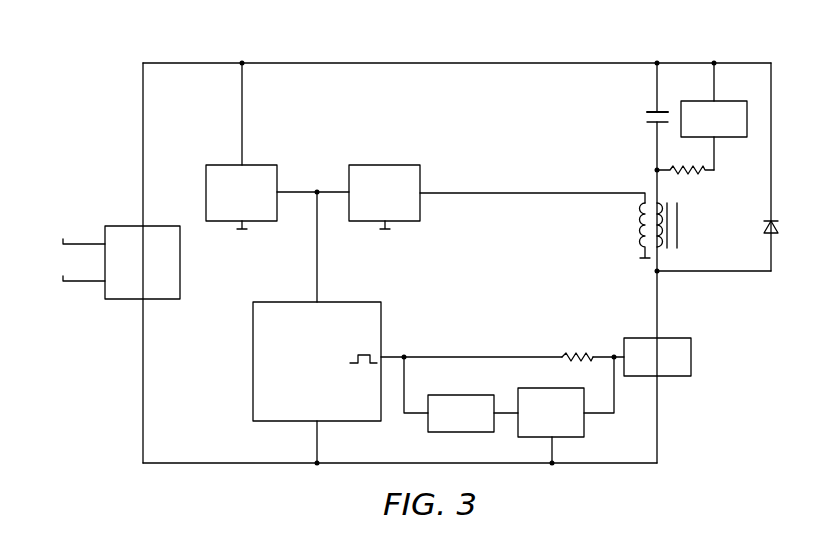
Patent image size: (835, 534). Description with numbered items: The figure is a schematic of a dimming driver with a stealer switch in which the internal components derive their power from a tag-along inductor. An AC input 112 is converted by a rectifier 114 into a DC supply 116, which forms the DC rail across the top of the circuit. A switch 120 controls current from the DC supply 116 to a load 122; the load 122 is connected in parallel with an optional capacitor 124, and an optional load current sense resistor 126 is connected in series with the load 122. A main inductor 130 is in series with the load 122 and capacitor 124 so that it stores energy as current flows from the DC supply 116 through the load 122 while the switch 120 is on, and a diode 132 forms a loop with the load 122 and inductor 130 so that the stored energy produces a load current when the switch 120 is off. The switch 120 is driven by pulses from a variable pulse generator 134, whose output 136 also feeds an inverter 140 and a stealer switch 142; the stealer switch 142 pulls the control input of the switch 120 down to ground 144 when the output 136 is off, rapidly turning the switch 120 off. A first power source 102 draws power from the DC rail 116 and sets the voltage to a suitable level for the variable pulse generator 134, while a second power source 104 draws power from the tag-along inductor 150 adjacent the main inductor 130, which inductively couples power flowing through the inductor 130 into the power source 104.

The first power source 102 is at (222, 165).
The second power source 104 is at (365, 165).
The AC input 112 is at (52, 276).
The rectifier 114 is at (122, 226).
The DC supply 116 is at (182, 63).
The switch 120 is at (633, 338).
The load 122 is at (728, 137).
The capacitor 124 is at (652, 112).
The load current sense resistor 126 is at (695, 172).
The inductor 130 is at (660, 245).
The diode 132 is at (778, 238).
The variable pulse generator 134 is at (272, 302).
The output 136 is at (433, 357).
The inverter 140 is at (443, 433).
The stealer switch 142 is at (532, 437).
The ground 144 is at (318, 466).
The tag-along inductor 150 is at (638, 232).